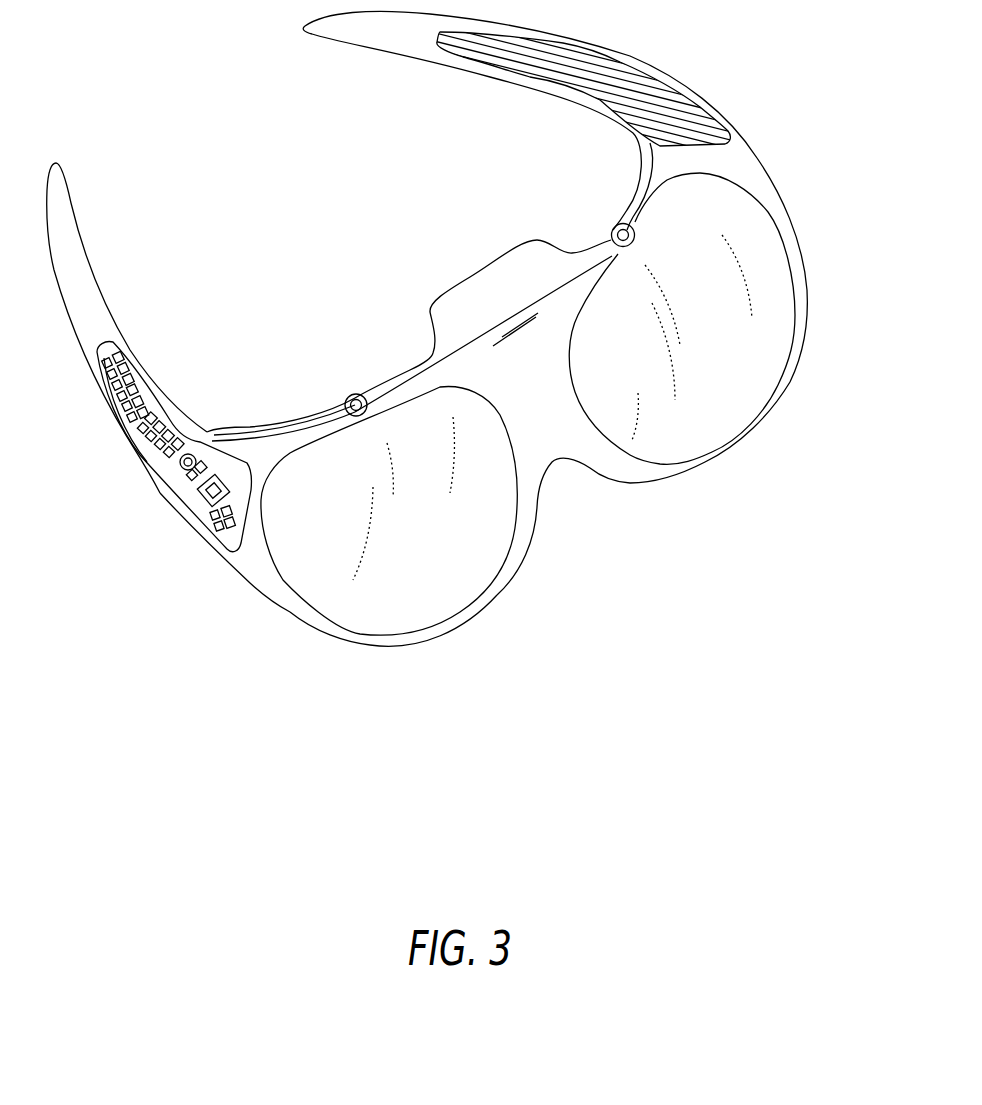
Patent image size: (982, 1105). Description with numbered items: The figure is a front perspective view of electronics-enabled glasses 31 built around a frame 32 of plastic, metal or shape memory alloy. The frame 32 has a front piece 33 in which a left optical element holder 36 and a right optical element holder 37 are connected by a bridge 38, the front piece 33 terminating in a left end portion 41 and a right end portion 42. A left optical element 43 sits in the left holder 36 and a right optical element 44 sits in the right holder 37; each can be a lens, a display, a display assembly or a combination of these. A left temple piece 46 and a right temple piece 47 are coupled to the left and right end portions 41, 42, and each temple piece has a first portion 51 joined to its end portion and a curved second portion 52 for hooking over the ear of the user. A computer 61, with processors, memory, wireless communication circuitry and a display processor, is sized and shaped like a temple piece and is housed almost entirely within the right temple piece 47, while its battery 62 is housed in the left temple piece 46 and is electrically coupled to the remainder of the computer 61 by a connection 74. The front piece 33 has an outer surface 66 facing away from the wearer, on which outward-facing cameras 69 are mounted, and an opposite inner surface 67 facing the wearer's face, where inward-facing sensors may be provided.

The glasses 31 is at (838, 31).
The frame 32 is at (679, 60).
The front piece 33 is at (815, 246).
The left optical element holder 36 is at (790, 382).
The right optical element holder 37 is at (487, 591).
The bridge 38 is at (548, 262).
The left end portion 41 is at (750, 160).
The right end portion 42 is at (258, 571).
The left optical element 43 is at (375, 616).
The right optical element 44 is at (682, 451).
The left temple piece 46 is at (527, 89).
The right temple piece 47 is at (94, 414).
The first portion 51 is at (722, 109).
The second portion 52 is at (120, 345).
The computer 61 is at (180, 450).
The battery 62 is at (571, 50).
The outer surface 66 is at (812, 198).
The inner surface 67 is at (432, 306).
The cameras 69 is at (610, 228).
The connection 74 is at (280, 426).